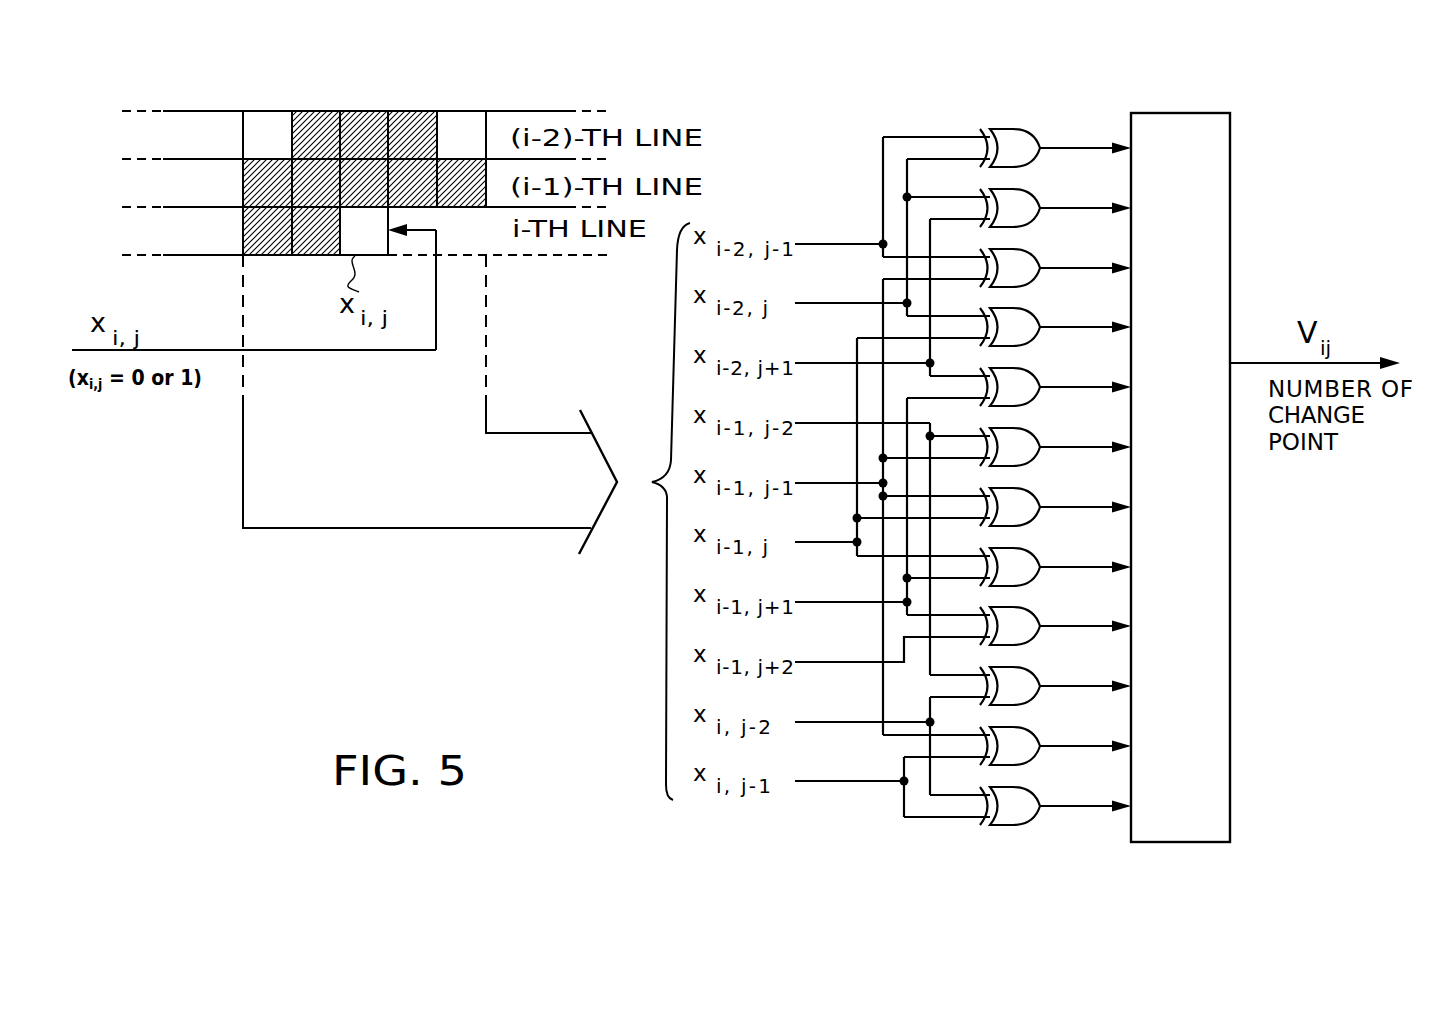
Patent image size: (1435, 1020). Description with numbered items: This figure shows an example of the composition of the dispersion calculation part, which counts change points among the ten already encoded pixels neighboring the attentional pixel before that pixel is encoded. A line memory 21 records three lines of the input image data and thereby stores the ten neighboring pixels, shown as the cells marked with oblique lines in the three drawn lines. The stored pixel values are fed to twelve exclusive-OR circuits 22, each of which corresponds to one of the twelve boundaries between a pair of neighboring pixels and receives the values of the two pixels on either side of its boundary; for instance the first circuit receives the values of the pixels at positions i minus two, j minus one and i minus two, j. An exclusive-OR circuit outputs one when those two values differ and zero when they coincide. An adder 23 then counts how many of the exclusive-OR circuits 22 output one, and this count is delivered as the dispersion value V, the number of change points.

The line memory 21 is at (480, 107).
The exclusive-OR circuits 22 is at (1055, 465).
The adder 23 is at (1219, 690).